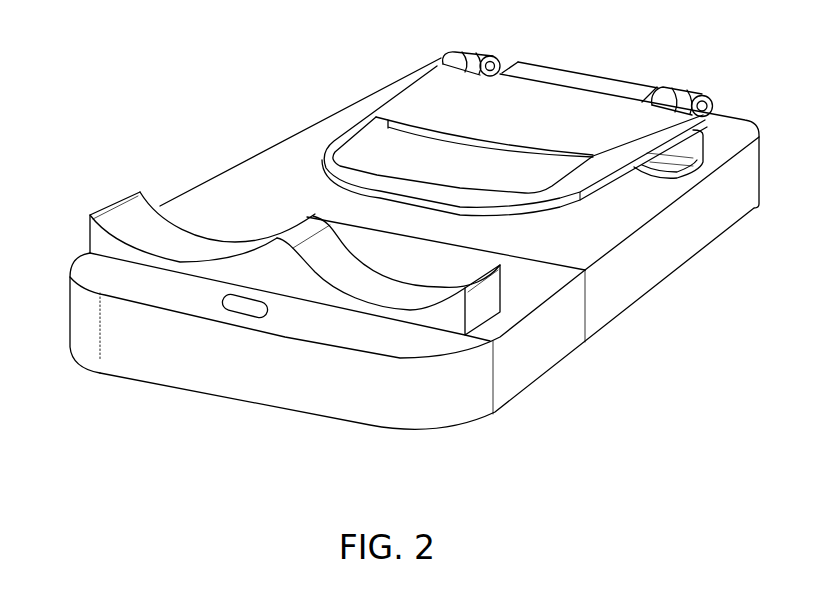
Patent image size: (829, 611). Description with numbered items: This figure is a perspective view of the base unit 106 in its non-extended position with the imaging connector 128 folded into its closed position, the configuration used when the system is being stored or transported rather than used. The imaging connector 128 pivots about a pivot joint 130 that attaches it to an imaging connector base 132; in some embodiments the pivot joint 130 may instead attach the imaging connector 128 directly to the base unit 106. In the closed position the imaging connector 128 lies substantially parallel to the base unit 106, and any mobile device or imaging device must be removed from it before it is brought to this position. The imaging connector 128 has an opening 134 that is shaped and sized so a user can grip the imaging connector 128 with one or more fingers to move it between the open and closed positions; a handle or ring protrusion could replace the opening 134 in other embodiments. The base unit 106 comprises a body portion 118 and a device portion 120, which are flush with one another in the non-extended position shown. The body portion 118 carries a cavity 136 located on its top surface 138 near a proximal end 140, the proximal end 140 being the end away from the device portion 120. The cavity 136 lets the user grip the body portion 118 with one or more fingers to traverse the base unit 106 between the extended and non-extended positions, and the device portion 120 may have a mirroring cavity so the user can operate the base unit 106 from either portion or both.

The base unit 106 is at (269, 122).
The body portion 118 is at (177, 212).
The device portion 120 is at (247, 158).
The imaging connector 128 is at (400, 103).
The pivot joint 130 is at (706, 93).
The imaging connector base 132 is at (710, 142).
The opening 134 is at (553, 153).
The cavity 136 is at (243, 301).
The top surface 138 is at (383, 343).
The proximal end 140 is at (152, 343).